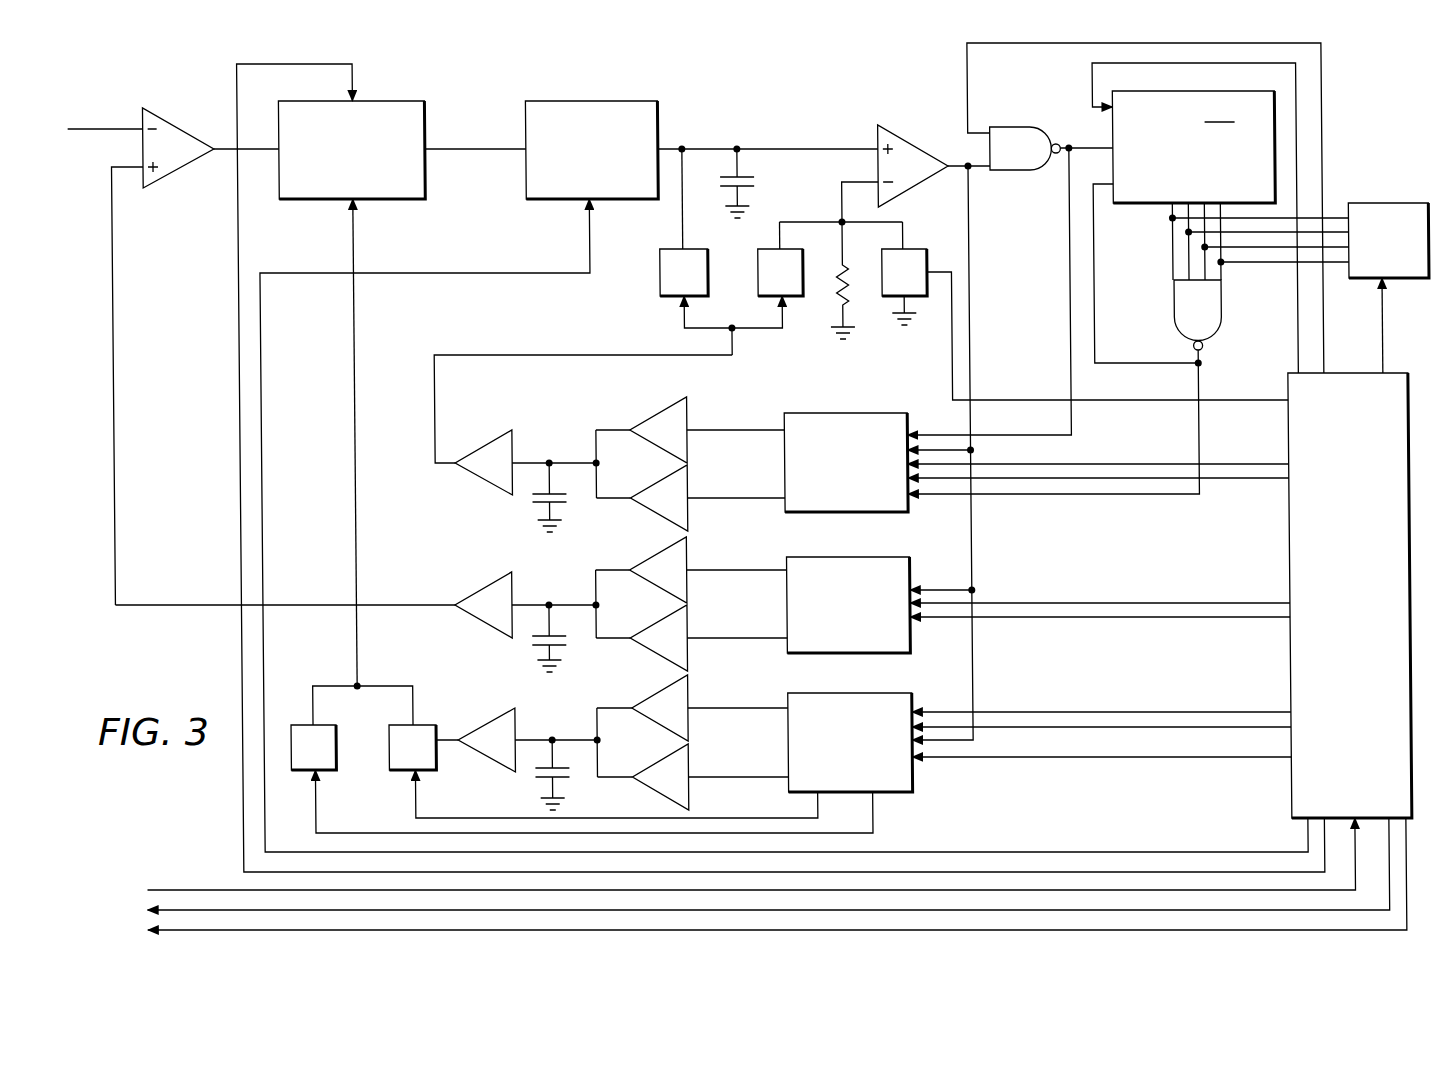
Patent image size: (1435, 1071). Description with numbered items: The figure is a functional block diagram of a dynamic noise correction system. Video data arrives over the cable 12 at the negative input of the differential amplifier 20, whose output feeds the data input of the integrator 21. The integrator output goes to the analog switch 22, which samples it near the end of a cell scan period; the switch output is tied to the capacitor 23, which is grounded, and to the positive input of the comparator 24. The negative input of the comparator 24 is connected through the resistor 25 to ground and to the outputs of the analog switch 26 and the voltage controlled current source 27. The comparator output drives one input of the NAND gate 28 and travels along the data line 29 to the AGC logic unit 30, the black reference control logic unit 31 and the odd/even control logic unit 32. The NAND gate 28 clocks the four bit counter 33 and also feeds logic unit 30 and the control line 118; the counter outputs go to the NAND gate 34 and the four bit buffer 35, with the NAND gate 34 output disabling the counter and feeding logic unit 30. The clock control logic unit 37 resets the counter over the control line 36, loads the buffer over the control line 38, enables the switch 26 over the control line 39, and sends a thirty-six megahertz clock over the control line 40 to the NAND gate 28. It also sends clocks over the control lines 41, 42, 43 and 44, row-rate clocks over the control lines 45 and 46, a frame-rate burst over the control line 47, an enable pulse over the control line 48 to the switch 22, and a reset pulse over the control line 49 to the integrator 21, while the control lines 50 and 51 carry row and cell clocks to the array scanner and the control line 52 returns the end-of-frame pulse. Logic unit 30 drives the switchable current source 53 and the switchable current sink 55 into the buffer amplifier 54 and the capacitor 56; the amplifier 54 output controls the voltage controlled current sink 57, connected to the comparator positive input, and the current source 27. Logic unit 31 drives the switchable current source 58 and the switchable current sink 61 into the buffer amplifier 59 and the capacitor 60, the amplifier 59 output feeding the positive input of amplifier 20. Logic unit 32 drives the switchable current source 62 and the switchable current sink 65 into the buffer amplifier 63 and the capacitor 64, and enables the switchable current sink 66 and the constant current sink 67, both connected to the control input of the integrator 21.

The cable 12 is at (94, 130).
The differential amplifier 20 is at (167, 152).
The integrator 21 is at (402, 108).
The analog switch 22 is at (642, 110).
The capacitor 23 is at (758, 182).
The comparator 24 is at (918, 165).
The resistor 25 is at (843, 290).
The analog switch 26 is at (922, 260).
The voltage controlled current source 27 is at (762, 290).
The NAND gate 28 is at (1010, 145).
The data line 29 is at (974, 340).
The automatic gain control (AGC) logic unit 30 is at (888, 426).
The black reference control logic unit 31 is at (889, 642).
The odd/even control logic unit 32 is at (897, 788).
The four bit counter 33 is at (1184, 227).
The NAND gate 34 is at (1195, 318).
The four bit buffer 35 is at (1382, 222).
The control line 36 is at (1298, 336).
The clock control logic unit 37 is at (1302, 512).
The control line 38 is at (1386, 326).
The control line 39 is at (1232, 400).
The control line 40 is at (1326, 152).
The control line 41 is at (1228, 464).
The control line 42 is at (1156, 603).
The control line 43 is at (1210, 712).
The control line 44 is at (1232, 727).
The control line 45 is at (1248, 480).
The control line 46 is at (1088, 758).
The control line 47 is at (1128, 618).
The control line 48 is at (1082, 852).
The control line 49 is at (1170, 870).
The control line 50 is at (313, 912).
The control line 51 is at (228, 930).
The control line 52 is at (205, 890).
The switchable current source 53 is at (680, 406).
The buffer amplifier 54 is at (490, 455).
The switchable current sink 55 is at (680, 490).
The capacitor 56 is at (534, 506).
The voltage controlled current sink 57 is at (662, 286).
The switchable current source 58 is at (680, 554).
The buffer amplifier 59 is at (490, 592).
The capacitor 60 is at (540, 646).
The switchable current sink 61 is at (680, 630).
The switchable current source 62 is at (670, 706).
The buffer amplifier 63 is at (493, 730).
The capacitor 64 is at (540, 784).
The switchable current sink 65 is at (672, 772).
The switchable current sink 66 is at (386, 738).
The constant current sink 67 is at (331, 756).
The control line 118 is at (1072, 285).